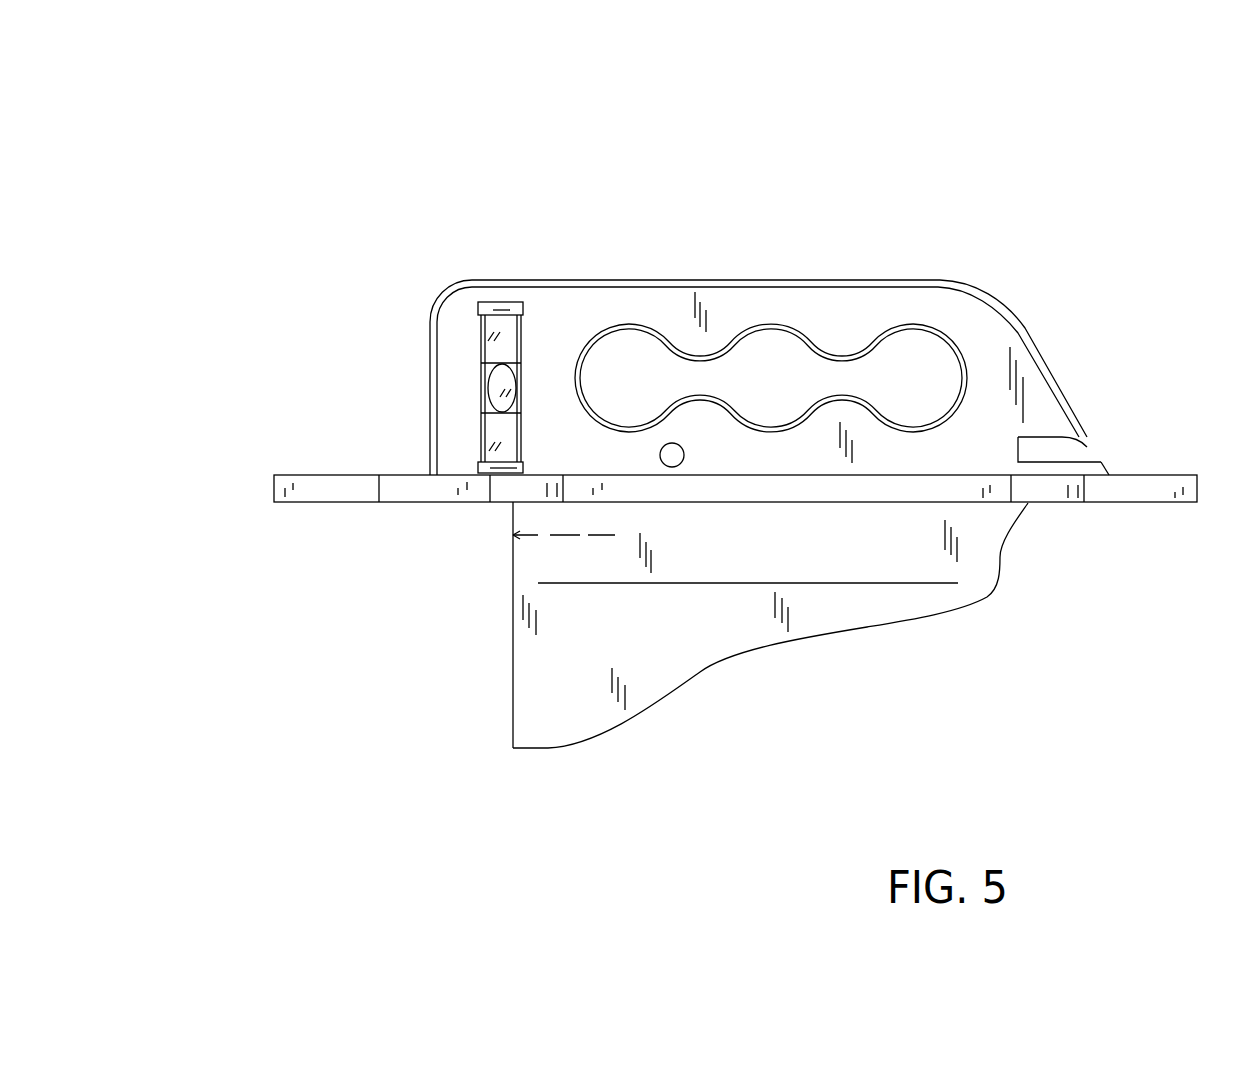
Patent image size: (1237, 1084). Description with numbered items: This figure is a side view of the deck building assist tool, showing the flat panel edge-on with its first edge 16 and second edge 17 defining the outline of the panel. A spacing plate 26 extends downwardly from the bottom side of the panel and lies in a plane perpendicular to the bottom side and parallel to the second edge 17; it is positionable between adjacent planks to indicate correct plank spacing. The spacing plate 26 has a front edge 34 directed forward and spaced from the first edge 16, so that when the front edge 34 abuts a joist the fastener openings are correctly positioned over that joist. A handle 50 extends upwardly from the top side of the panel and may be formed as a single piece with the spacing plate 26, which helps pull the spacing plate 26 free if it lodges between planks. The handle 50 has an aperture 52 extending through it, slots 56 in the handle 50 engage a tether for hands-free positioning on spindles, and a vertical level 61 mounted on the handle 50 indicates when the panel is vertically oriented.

The first edge 16 is at (272, 483).
The second edge 17 is at (913, 493).
The spacing plate 26 is at (513, 749).
The front edge 34 is at (513, 620).
The handle 50 is at (1033, 328).
The finger opening 52 is at (950, 357).
The slots 56 is at (1087, 446).
The vertical level 61 is at (512, 338).